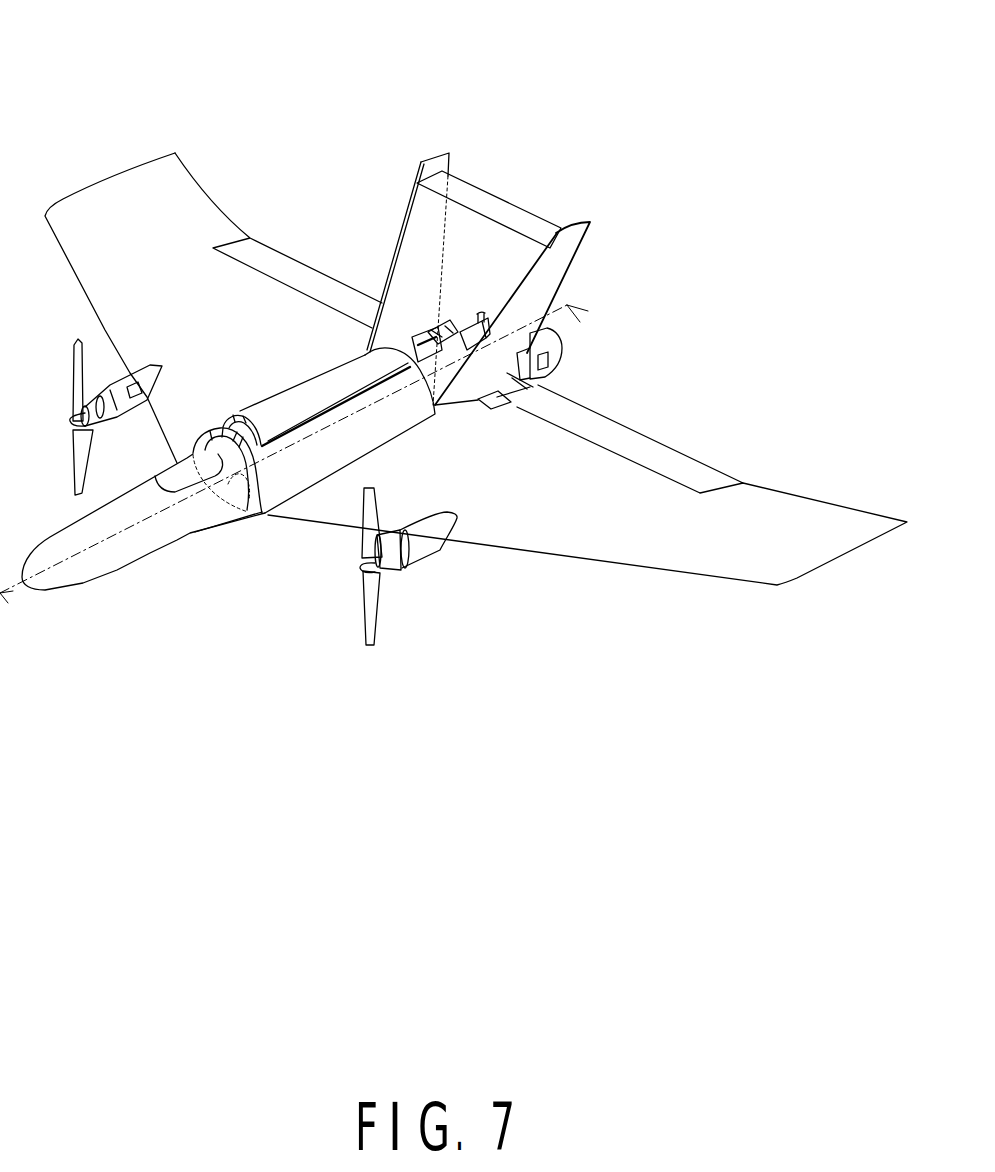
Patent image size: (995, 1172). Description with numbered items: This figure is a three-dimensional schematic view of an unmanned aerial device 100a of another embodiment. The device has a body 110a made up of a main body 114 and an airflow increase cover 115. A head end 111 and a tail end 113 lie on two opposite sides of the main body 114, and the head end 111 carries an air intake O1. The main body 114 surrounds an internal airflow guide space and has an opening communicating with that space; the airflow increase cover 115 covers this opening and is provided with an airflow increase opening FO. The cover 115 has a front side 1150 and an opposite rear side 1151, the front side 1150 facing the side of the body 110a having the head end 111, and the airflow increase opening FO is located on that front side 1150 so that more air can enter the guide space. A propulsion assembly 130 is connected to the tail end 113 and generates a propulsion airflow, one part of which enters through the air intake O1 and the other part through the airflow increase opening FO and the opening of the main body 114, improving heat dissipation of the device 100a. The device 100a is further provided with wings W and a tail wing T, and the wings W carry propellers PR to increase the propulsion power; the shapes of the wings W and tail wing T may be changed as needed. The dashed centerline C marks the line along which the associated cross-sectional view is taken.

The unmanned aerial device 100a is at (68, 50).
The body 110a is at (345, 627).
The head end 111 is at (254, 475).
The tail end 113 is at (449, 350).
The main body 114 is at (266, 452).
The airflow increase cover 115 is at (287, 405).
The front side 1150 is at (233, 414).
The rear side 1151 is at (395, 350).
The propulsion assembly 130 is at (483, 378).
The tail wing T is at (563, 270).
The wings W is at (612, 538).
The propellers PR is at (372, 603).
The airflow increase opening FO is at (223, 416).
The air intake O1 is at (240, 483).
The line C- C is at (12, 598).